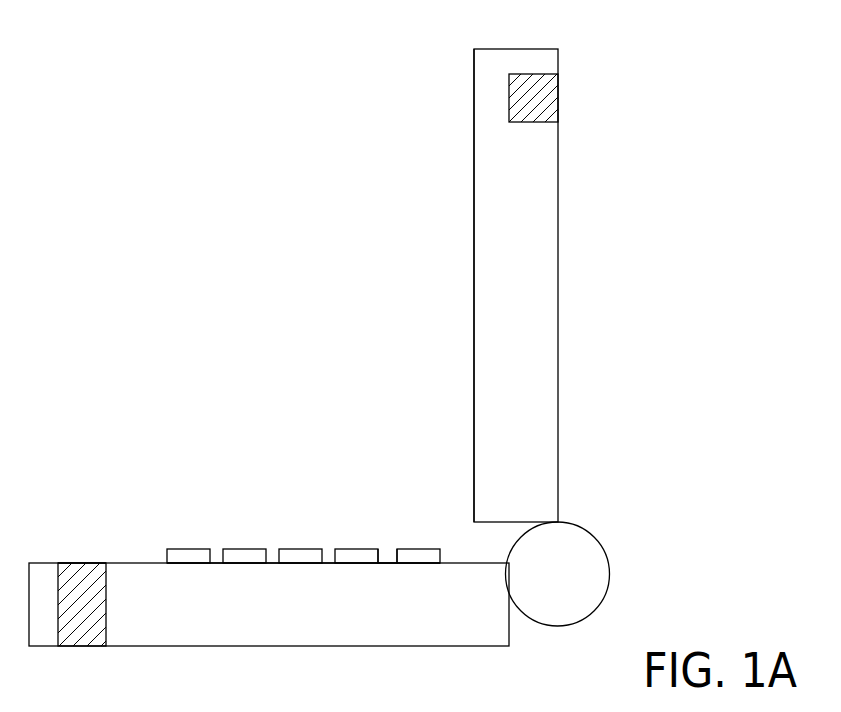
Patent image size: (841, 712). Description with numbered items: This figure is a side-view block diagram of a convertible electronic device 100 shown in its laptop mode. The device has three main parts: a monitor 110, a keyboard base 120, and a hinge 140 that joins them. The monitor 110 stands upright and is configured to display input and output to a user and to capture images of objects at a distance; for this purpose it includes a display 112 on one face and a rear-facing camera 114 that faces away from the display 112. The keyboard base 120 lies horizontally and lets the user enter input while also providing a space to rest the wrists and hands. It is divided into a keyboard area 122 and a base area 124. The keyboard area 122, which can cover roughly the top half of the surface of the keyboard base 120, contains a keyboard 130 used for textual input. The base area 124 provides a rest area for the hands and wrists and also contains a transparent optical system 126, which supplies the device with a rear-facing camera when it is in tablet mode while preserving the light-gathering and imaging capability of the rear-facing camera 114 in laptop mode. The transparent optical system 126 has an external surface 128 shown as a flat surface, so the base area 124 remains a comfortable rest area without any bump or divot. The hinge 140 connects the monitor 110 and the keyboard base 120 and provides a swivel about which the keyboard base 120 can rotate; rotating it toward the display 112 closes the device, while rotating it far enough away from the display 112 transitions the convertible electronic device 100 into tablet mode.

The convertible electronic device 100 is at (388, 58).
The monitor 110 is at (558, 204).
The display 112 is at (474, 245).
The rear-facing camera 114 is at (558, 91).
The keyboard base 120 is at (390, 648).
The keyboard area 122 is at (315, 517).
The base area 124 is at (141, 541).
The transparent optical system 126 is at (85, 646).
The external surface 128 is at (85, 563).
The keyboard 130 is at (383, 548).
The hinge 140 is at (603, 566).